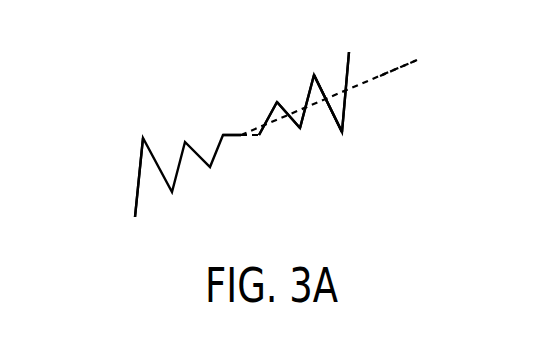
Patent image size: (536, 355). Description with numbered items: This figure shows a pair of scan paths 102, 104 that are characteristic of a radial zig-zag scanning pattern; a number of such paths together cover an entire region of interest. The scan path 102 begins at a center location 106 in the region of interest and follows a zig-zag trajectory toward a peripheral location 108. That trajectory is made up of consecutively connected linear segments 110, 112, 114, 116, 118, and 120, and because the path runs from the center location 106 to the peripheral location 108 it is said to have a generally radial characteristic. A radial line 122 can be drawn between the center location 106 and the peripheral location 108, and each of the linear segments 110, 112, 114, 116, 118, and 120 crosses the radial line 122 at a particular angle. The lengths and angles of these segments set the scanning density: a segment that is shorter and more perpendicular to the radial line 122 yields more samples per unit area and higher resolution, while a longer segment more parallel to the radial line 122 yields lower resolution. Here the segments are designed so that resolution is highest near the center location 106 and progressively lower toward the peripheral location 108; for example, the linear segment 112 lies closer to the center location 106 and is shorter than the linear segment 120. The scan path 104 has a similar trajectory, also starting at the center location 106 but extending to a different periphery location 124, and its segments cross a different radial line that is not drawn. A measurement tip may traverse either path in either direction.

The scan path 102 is at (353, 67).
The scan path 104 is at (135, 213).
The center location 106 is at (243, 133).
The peripheral location 108 is at (350, 91).
The linear segment 110 is at (255, 137).
The linear segment 112 is at (270, 130).
The linear segment 114 is at (295, 133).
The linear segment 116 is at (305, 127).
The linear segment 118 is at (332, 125).
The linear segment 120 is at (352, 112).
The radial line 122 is at (388, 77).
The periphery location 124 is at (203, 134).